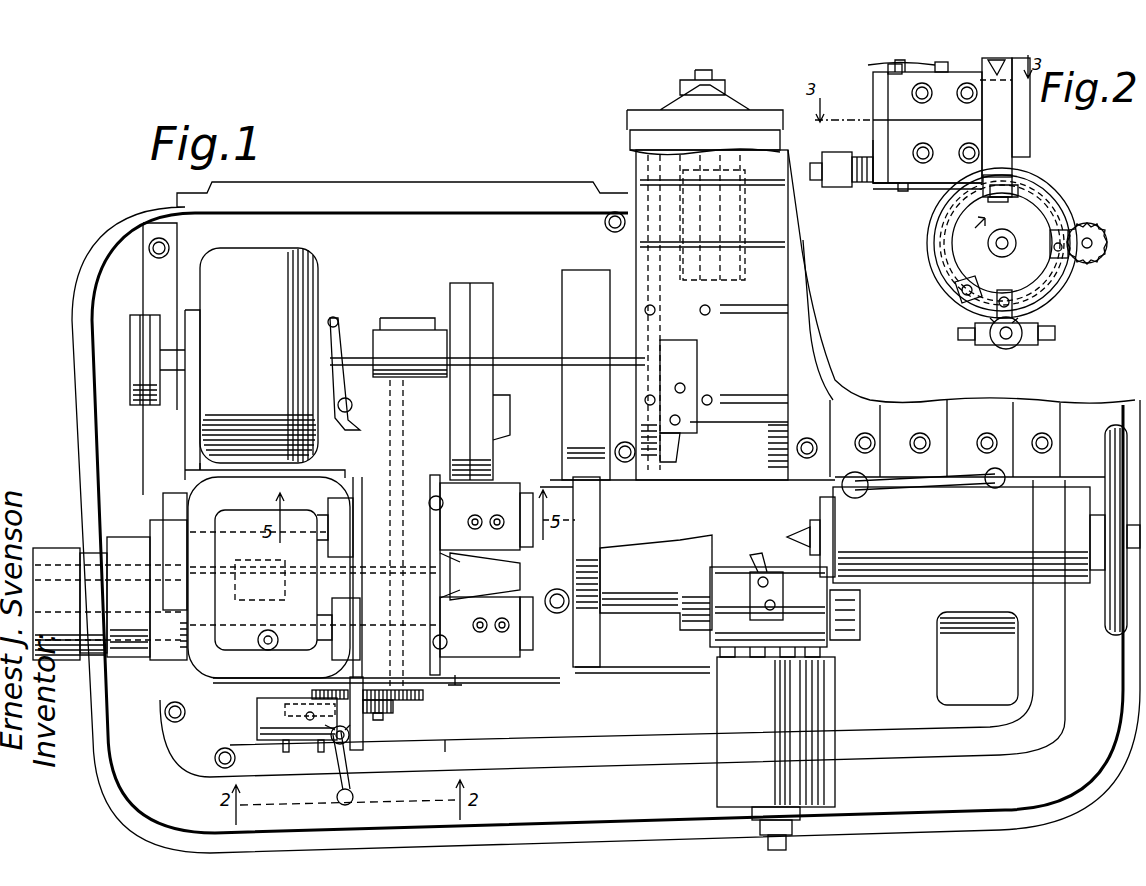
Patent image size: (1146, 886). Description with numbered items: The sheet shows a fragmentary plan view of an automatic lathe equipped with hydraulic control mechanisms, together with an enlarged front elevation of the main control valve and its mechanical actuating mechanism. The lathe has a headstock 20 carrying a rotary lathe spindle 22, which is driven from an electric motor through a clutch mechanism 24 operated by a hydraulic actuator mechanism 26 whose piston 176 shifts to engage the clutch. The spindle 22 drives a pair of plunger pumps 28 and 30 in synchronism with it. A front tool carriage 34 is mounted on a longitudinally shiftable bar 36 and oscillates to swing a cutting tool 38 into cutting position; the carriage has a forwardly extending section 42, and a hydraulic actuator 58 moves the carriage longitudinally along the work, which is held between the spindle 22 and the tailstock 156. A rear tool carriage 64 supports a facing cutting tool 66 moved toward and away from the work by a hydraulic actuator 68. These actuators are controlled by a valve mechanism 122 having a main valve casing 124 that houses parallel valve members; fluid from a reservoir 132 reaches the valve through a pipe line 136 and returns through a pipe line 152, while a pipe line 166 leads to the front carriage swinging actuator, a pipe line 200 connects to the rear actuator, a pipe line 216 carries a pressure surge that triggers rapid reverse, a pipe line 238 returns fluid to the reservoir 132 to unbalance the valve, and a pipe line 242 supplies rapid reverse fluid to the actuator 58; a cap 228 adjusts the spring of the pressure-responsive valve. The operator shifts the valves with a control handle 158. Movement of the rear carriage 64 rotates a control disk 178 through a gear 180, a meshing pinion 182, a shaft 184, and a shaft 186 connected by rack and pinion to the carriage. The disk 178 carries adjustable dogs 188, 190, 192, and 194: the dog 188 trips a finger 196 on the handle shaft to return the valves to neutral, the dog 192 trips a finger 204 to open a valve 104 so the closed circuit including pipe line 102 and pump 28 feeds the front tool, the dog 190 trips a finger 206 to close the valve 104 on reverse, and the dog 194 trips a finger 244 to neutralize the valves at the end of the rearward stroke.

In FIG. 1, the headstock 20 is at (442, 672).
In FIG. 1, the lathe spindle 22 is at (603, 523).
In FIG. 1, the clutch mechanism 24 is at (310, 277).
In FIG. 1, the hydraulic actuator mechanism 26 is at (382, 328).
In FIG. 1, the plunger pump 28 is at (352, 629).
In FIG. 1, the plunger pump 30 is at (352, 527).
In FIG. 1, the front tool carriage 34 is at (705, 645).
In FIG. 1, the bar 36 is at (626, 610).
In FIG. 1, the cutting tool 38 is at (764, 553).
In FIG. 1, the forwardly extending section 42 is at (745, 723).
In FIG. 1, the hydraulic actuator 58 is at (60, 545).
In FIG. 1, the rear tool carriage 64 is at (628, 283).
In FIG. 1, the cutting tool 66 is at (682, 448).
In FIG. 1, the hydraulic actuator 68 is at (665, 145).
In FIG. 2, the pipe line 102 is at (1057, 336).
In FIG. 2, the valve 104 is at (998, 358).
In FIG. 1, the valve mechanism 122 is at (240, 720).
In FIG. 2, the valve mechanism 122 is at (893, 190).
In FIG. 2, the main valve casing 124 is at (930, 175).
In FIG. 1, the reservoir 132 is at (196, 676).
In FIG. 2, the pipe line 136 is at (885, 68).
In FIG. 2, the pipe line 152 is at (893, 74).
In FIG. 1, the tailstock 156 is at (963, 532).
In FIG. 1, the control handle 158 is at (352, 768).
In FIG. 2, the control handle 158 is at (1000, 68).
In FIG. 2, the pipe line 166 is at (975, 121).
In FIG. 2, the piston 176 is at (965, 255).
In FIG. 1, the control disk 178 is at (464, 750).
In FIG. 1, the gear 180 is at (310, 690).
In FIG. 2, the gear 180 is at (1046, 190).
In FIG. 1, the pinion 182 is at (422, 700).
In FIG. 2, the pinion 182 is at (1080, 220).
In FIG. 1, the shaft 184 is at (494, 421).
In FIG. 2, the shaft 184 is at (1090, 250).
In FIG. 1, the shaft 186 is at (526, 356).
In FIG. 1, the dog 188 is at (398, 713).
In FIG. 2, the dog 188 is at (1062, 258).
In FIG. 2, the dog 190 is at (992, 312).
In FIG. 2, the dog 192 is at (952, 296).
In FIG. 2, the dog 194 is at (940, 215).
In FIG. 1, the finger 196 is at (297, 738).
In FIG. 2, the finger 196 is at (955, 172).
In FIG. 2, the pipe line 200 is at (916, 147).
In FIG. 2, the finger 204 is at (1025, 343).
In FIG. 2, the finger 206 is at (985, 346).
In FIG. 2, the pipe line 216 is at (966, 146).
In FIG. 2, the cap 228 is at (833, 185).
In FIG. 2, the pipe line 238 is at (893, 160).
In FIG. 2, the pipe line 242 is at (912, 95).
In FIG. 1, the finger 244 is at (385, 720).
In FIG. 2, the finger 244 is at (1017, 193).